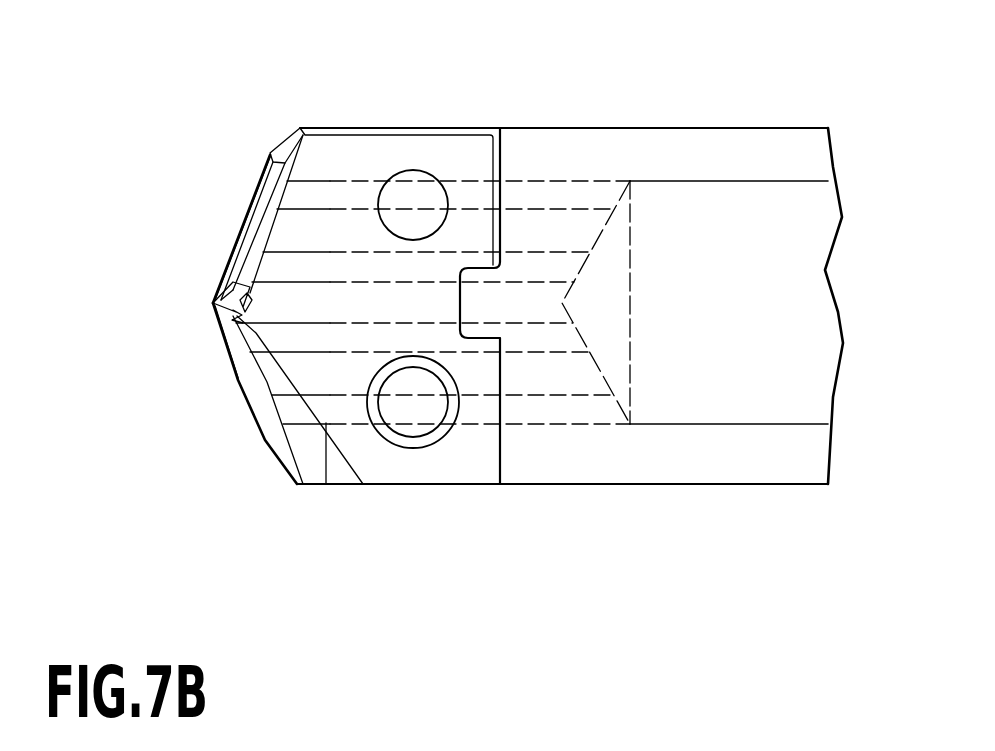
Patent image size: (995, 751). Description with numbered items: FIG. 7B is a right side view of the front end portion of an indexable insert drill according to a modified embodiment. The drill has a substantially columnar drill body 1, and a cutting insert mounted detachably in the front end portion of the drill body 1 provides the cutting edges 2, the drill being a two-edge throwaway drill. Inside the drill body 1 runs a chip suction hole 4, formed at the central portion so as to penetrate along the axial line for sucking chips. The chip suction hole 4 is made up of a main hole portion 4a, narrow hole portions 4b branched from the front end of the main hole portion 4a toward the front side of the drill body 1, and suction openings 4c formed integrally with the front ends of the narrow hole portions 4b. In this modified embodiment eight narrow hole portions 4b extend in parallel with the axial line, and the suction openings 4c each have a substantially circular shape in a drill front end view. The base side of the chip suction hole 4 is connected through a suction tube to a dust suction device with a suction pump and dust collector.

The drill body 1 is at (757, 486).
The cutting edges 2 is at (240, 230).
The chip suction hole 4 is at (568, 575).
The main hole portion 4a is at (606, 425).
The narrow hole portions 4b is at (470, 255).
The suction openings 4c is at (300, 194).